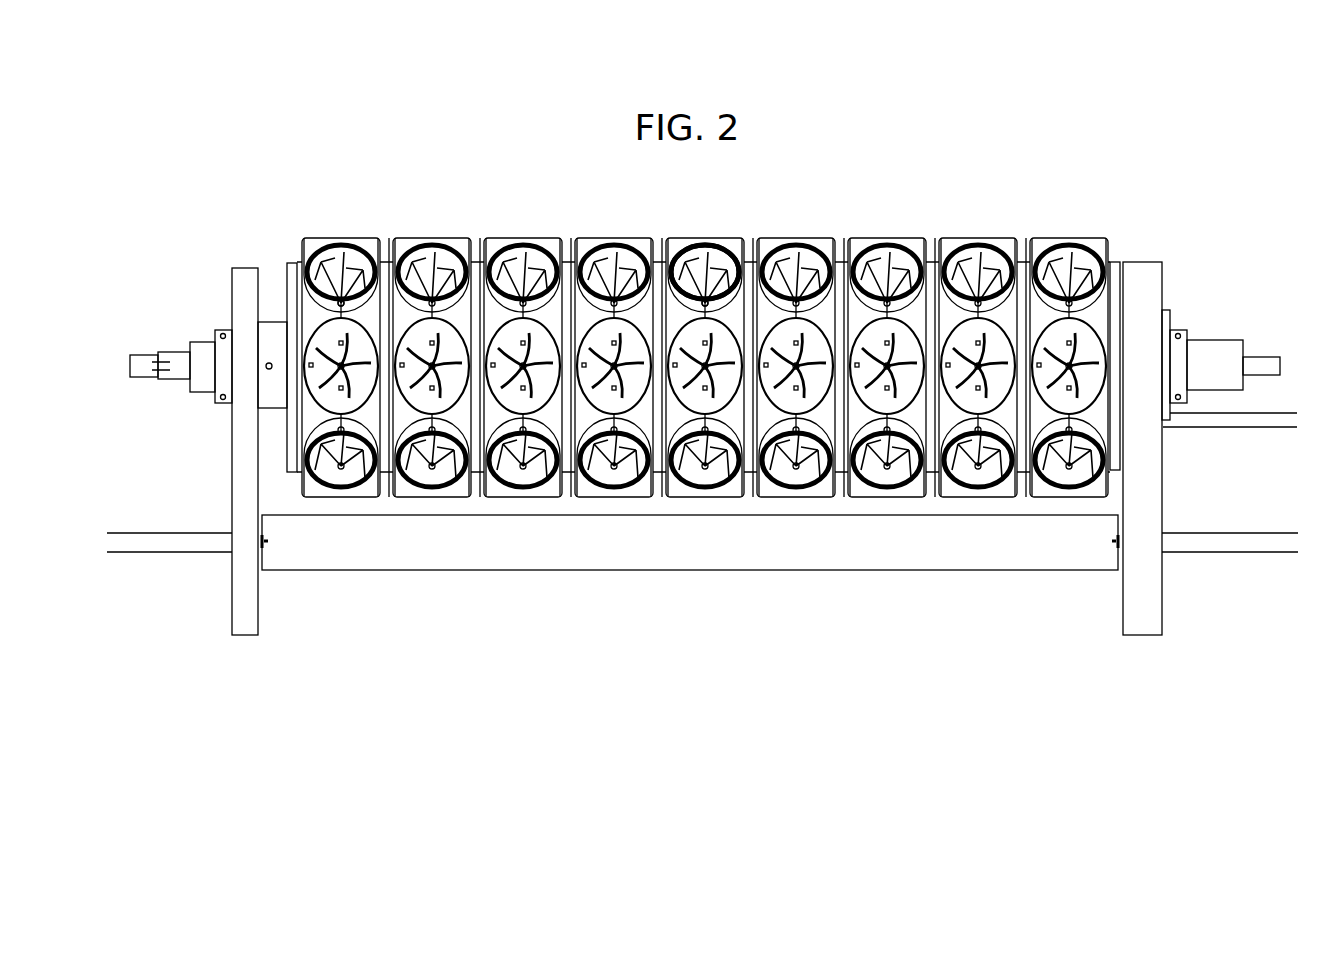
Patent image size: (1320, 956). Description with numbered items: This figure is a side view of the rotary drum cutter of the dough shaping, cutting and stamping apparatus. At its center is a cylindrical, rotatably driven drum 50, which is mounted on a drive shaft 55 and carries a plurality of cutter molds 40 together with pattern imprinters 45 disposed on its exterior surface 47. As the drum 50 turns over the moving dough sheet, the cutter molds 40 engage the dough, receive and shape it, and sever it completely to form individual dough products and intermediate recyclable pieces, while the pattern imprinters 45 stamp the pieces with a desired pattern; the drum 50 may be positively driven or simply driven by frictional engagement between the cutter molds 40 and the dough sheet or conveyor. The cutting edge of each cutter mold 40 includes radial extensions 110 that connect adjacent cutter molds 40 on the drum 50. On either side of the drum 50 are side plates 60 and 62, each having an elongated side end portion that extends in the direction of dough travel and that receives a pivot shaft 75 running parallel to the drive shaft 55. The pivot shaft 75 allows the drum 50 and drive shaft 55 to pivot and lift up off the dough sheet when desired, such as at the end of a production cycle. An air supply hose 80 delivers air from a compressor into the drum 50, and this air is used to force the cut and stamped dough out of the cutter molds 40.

The cutter mold 40 is at (740, 242).
The pattern imprinter 45 is at (707, 262).
The exterior surface 47 is at (1103, 315).
The cylindrical drum 50 is at (389, 238).
The drive shaft 55 is at (1260, 353).
The side plate 60 is at (232, 318).
The side plate 62 is at (1160, 508).
The pivot shaft 75 is at (173, 533).
The air supply hose 80 is at (1208, 428).
The radial extension 110 is at (340, 305).